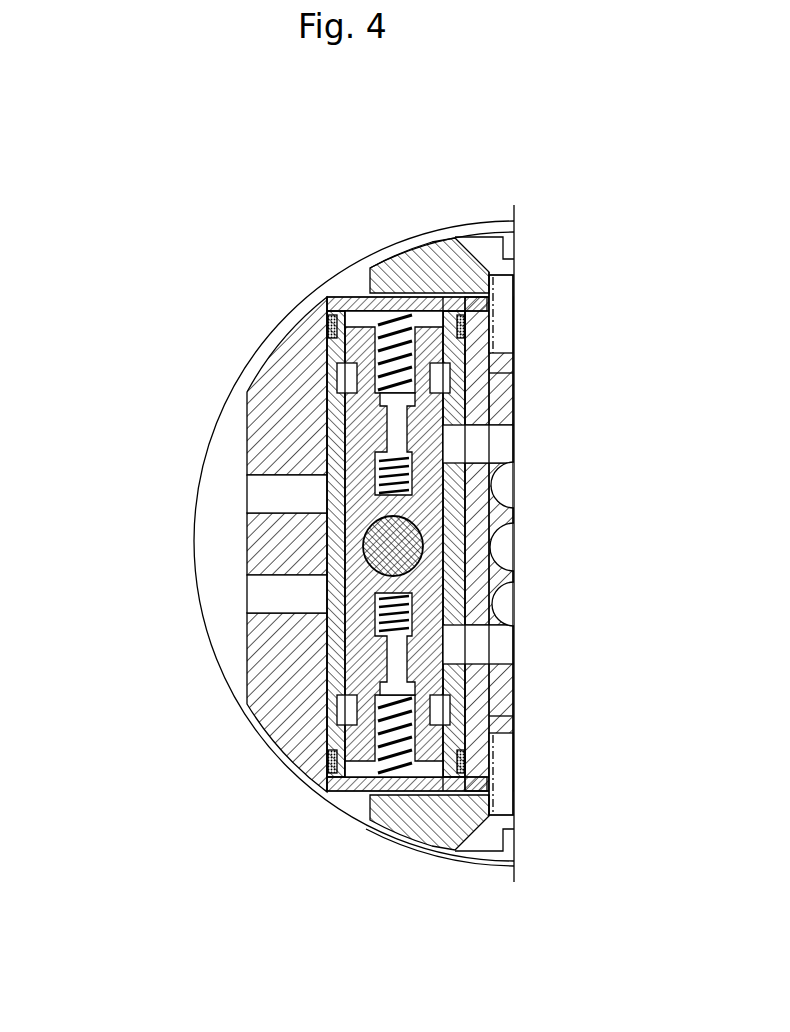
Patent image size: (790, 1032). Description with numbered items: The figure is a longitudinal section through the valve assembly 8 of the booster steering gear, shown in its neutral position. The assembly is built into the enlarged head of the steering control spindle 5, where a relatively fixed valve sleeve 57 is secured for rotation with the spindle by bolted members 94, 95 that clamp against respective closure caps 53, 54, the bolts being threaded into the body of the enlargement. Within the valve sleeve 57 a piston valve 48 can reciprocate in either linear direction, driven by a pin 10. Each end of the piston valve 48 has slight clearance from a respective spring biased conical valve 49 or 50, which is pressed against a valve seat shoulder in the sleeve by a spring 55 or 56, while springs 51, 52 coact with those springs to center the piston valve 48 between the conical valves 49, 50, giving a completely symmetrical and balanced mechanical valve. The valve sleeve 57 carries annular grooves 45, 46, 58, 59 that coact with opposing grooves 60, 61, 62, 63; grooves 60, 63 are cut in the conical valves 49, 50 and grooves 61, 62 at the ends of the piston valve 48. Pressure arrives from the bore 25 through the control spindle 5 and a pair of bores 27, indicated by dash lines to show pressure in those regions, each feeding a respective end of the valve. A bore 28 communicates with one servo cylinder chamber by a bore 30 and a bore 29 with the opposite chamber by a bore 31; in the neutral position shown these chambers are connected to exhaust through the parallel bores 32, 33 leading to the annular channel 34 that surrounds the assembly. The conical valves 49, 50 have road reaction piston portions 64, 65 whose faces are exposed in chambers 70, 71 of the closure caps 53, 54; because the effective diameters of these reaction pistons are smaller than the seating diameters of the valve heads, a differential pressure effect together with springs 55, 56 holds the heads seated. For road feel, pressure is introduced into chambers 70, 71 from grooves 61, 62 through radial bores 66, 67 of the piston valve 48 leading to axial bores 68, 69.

The valve assembly 8 is at (232, 200).
The steering control spindle 5 is at (283, 407).
The pin 10 is at (395, 547).
The bore 25 is at (503, 555).
The bores 27 is at (352, 384).
The bore 28 is at (490, 447).
The bore 29 is at (493, 650).
The bore 30 is at (504, 487).
The bore 31 is at (503, 608).
The bore 32 is at (275, 501).
The bore 33 is at (280, 601).
The annular channel 34 is at (228, 612).
The annular groove 45 is at (490, 731).
The annular groove 46 is at (462, 366).
The piston valve 48 is at (280, 497).
The conical valve 49 is at (465, 394).
The conical valve 50 is at (350, 681).
The spring 51 is at (355, 382).
The spring 52 is at (350, 640).
The closure cap 53 is at (352, 300).
The closure cap 54 is at (355, 790).
The spring 55 is at (385, 315).
The spring 56 is at (380, 768).
The valve sleeve 57 is at (453, 521).
The annular groove 58 is at (467, 482).
The annular groove 59 is at (507, 630).
The groove 60 is at (490, 355).
The groove 61 is at (490, 410).
The groove 62 is at (440, 666).
The groove 63 is at (488, 763).
The road reaction piston portion 64 is at (330, 334).
The road reaction piston portion 65 is at (330, 765).
The radial bore 66 is at (375, 466).
The radial bore 67 is at (355, 618).
The axial bore 68 is at (358, 452).
The axial bore 69 is at (358, 626).
The chamber 70 is at (430, 322).
The chamber 71 is at (430, 770).
The bolted member 94 is at (421, 277).
The bolted member 95 is at (420, 823).